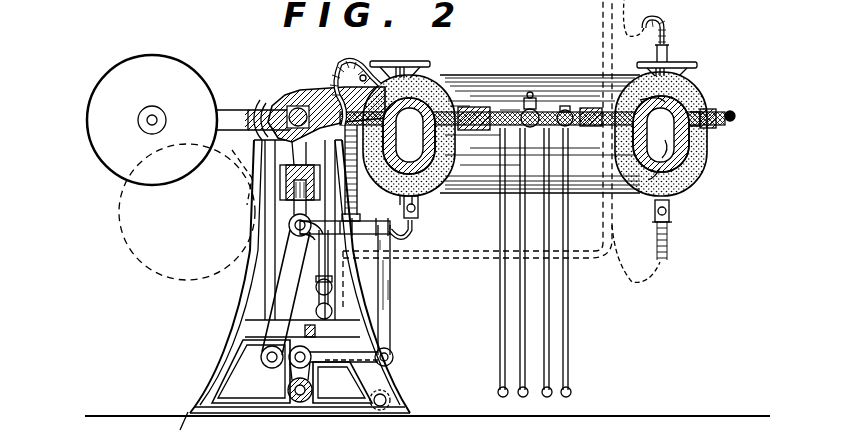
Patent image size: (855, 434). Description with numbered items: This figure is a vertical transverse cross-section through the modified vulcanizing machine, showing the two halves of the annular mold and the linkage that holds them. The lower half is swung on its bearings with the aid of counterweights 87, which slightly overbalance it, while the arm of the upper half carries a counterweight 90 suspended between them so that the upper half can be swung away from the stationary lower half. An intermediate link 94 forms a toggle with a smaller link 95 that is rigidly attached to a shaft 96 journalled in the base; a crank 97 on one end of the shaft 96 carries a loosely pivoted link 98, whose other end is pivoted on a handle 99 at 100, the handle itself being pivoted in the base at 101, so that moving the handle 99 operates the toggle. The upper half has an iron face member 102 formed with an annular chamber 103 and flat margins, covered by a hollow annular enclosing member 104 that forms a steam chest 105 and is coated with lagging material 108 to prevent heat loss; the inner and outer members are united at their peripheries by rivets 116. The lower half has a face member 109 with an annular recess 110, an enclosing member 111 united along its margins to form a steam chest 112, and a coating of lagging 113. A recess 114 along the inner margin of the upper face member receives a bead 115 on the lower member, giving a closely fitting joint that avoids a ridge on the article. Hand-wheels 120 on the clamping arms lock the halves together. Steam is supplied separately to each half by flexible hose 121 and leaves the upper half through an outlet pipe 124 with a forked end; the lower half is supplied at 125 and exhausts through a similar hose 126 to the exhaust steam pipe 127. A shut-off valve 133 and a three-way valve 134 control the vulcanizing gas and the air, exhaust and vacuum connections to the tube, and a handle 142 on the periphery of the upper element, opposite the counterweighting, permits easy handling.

The counterweights 87 is at (118, 258).
The counterweight 90 is at (105, 95).
The intermediate link 94 is at (290, 280).
The link 95 is at (280, 366).
The shaft 96 is at (303, 403).
The crank 97 is at (306, 372).
The link 98 is at (340, 355).
The handle 99 is at (391, 300).
The pivot 100 is at (393, 357).
The pivot 101 is at (390, 400).
The face member 102 is at (700, 100).
The annular chamber 103 is at (690, 88).
The hollow annular enclosing member 104 is at (683, 66).
The steam chest 105 is at (640, 98).
The lagging material 108 is at (622, 95).
The face member 109 is at (708, 135).
The annular recess 110 is at (685, 165).
The enclosing member 111 is at (690, 183).
The steam chest 112 is at (680, 193).
The lagging 113 is at (636, 196).
The recess 114 is at (450, 90).
The bead 115 is at (455, 192).
The rivets 116 is at (716, 113).
The hand-wheels 120 is at (412, 62).
The flexible hose 121 is at (668, 250).
The outlet pipe 124 is at (345, 62).
The supply connection 125 is at (669, 216).
The hose 126 is at (412, 248).
The exhaust steam pipe 127 is at (316, 288).
The shut-off valve 133 is at (571, 128).
The three-way valve 134 is at (533, 130).
The handle 142 is at (737, 116).